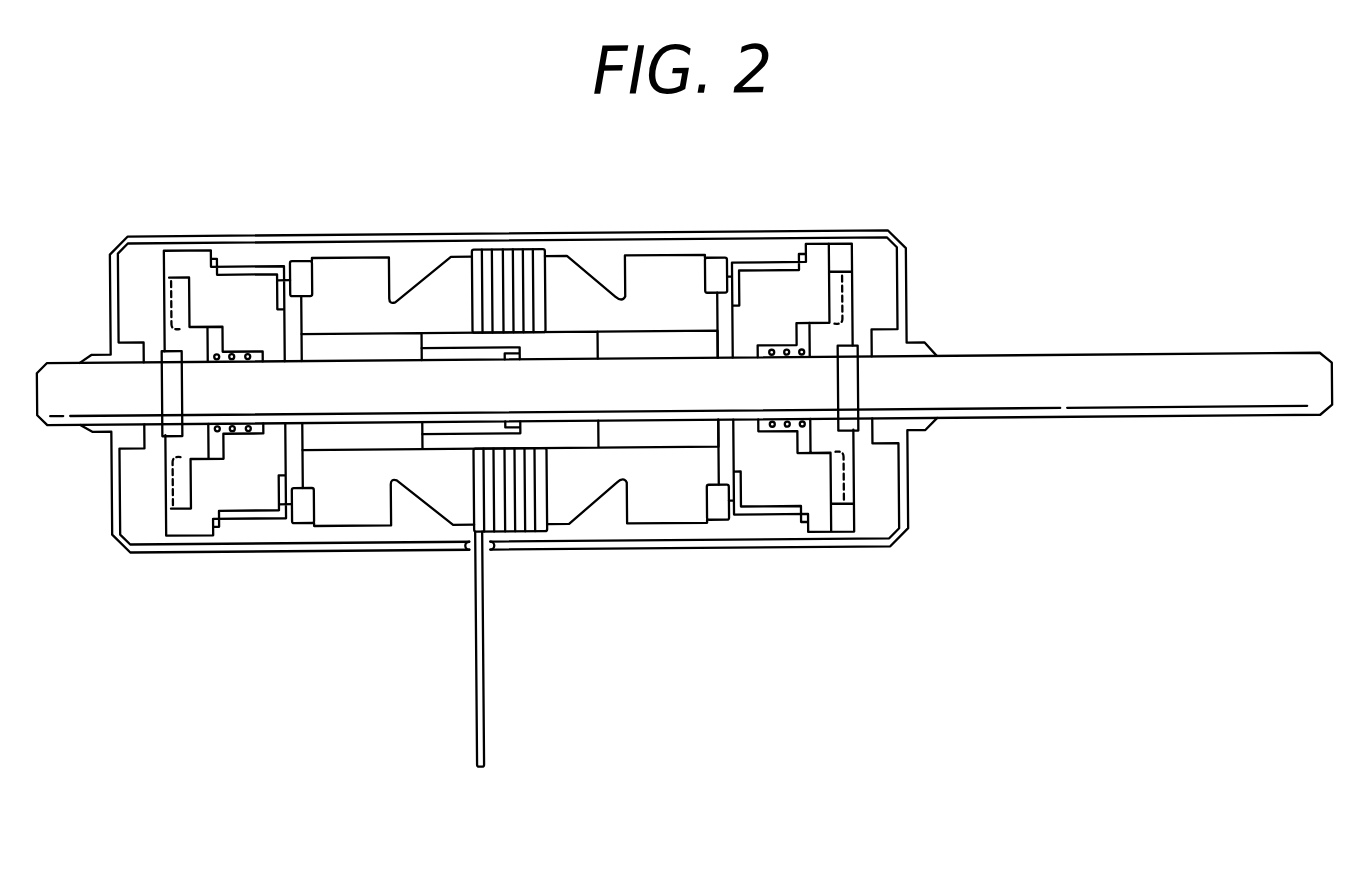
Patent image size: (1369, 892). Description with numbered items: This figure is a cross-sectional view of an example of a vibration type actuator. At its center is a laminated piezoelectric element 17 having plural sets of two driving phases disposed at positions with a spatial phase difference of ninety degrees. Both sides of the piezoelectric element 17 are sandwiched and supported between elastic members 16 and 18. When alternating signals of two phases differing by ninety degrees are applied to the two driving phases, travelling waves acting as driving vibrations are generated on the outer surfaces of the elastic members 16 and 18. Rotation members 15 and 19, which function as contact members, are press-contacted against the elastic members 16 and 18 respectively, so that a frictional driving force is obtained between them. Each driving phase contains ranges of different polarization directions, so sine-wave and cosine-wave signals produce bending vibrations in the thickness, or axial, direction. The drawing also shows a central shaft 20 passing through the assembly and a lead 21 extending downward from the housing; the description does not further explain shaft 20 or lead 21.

The rotation member 15 is at (245, 287).
The elastic member 16 is at (355, 272).
The laminated piezoelectric element 17 is at (517, 264).
The elastic member 18 is at (672, 267).
The rotation member 19 is at (815, 274).
The shaft 20 is at (1185, 354).
The lead terminal 21 is at (483, 661).